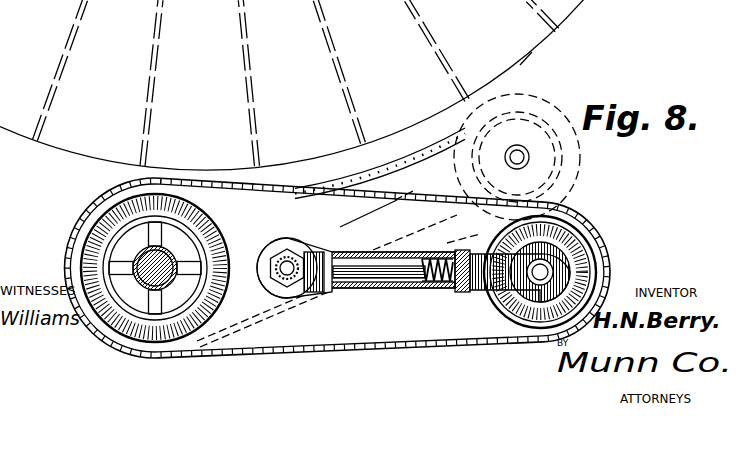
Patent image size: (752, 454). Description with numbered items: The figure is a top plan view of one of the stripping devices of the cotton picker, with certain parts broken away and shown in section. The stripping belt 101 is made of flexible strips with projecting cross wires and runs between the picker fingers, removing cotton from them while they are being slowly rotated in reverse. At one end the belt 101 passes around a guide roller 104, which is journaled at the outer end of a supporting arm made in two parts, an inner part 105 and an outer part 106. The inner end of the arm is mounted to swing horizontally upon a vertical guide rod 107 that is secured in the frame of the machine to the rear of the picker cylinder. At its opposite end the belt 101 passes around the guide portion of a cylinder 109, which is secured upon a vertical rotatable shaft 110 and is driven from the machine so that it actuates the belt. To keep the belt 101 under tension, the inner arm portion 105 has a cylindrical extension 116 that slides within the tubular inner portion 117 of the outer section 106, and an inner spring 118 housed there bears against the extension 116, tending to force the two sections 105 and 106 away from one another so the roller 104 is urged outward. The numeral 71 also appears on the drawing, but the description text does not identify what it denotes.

The spokes of large wheel 71 is at (328, 45).
The stripping belt 101 is at (351, 354).
The guide roller 104 is at (583, 250).
The inner arm part 105 is at (333, 293).
The outer arm part 106 is at (453, 292).
The vertical guide rod 107 is at (328, 233).
The cylinder 109 is at (78, 224).
The vertical rotatable shaft 110 is at (170, 258).
The cylindrical extension 116 is at (383, 288).
The tubular inner portion 117 is at (428, 243).
The inner spring 118 is at (437, 288).